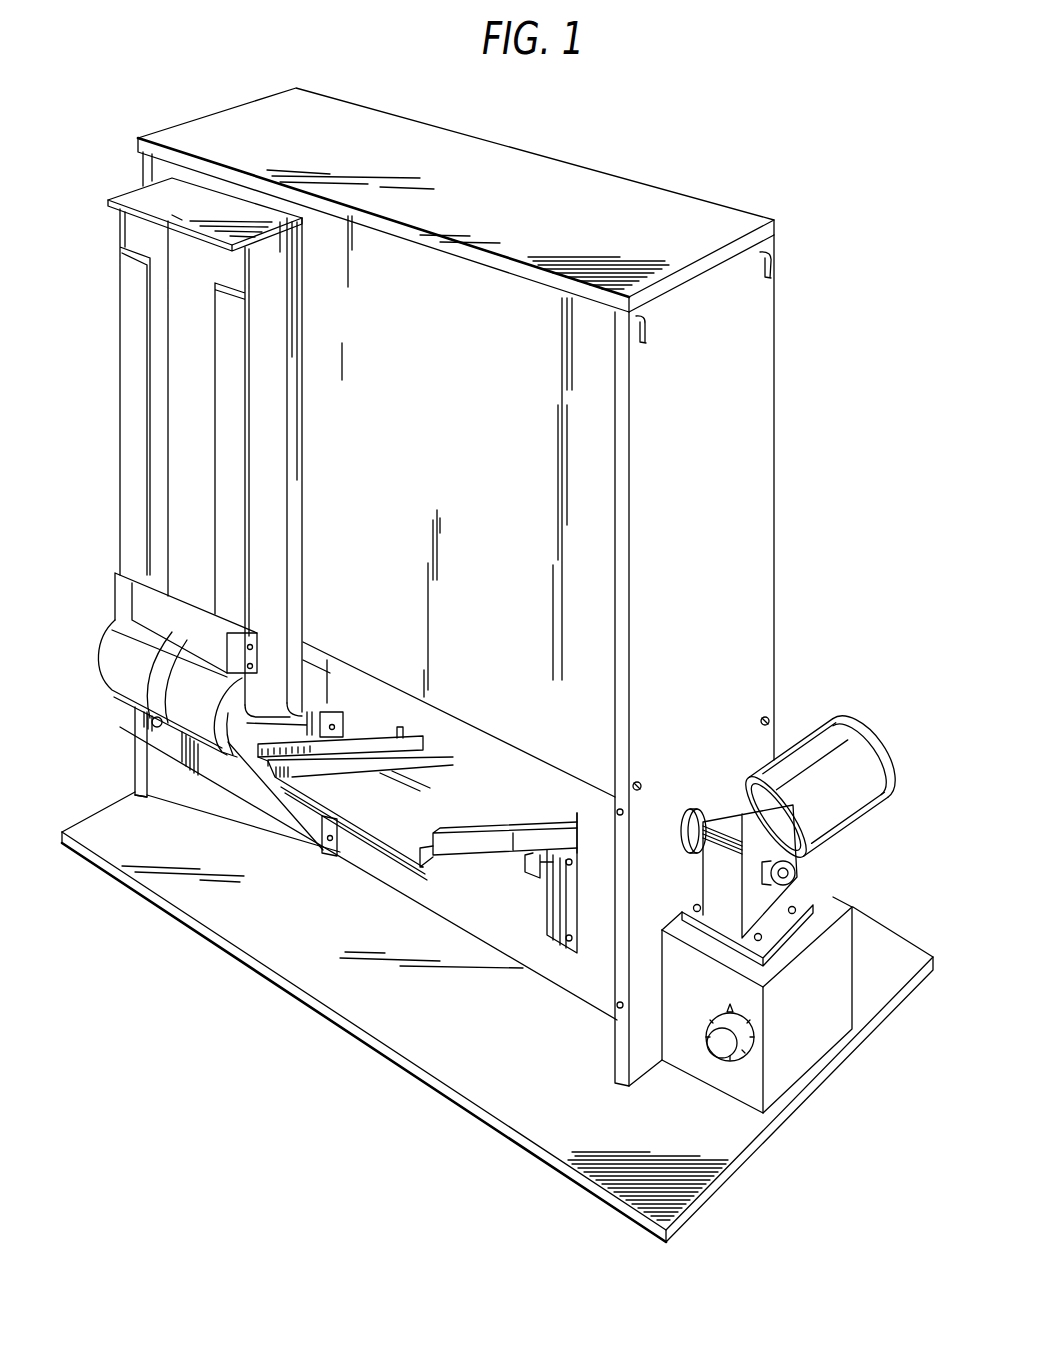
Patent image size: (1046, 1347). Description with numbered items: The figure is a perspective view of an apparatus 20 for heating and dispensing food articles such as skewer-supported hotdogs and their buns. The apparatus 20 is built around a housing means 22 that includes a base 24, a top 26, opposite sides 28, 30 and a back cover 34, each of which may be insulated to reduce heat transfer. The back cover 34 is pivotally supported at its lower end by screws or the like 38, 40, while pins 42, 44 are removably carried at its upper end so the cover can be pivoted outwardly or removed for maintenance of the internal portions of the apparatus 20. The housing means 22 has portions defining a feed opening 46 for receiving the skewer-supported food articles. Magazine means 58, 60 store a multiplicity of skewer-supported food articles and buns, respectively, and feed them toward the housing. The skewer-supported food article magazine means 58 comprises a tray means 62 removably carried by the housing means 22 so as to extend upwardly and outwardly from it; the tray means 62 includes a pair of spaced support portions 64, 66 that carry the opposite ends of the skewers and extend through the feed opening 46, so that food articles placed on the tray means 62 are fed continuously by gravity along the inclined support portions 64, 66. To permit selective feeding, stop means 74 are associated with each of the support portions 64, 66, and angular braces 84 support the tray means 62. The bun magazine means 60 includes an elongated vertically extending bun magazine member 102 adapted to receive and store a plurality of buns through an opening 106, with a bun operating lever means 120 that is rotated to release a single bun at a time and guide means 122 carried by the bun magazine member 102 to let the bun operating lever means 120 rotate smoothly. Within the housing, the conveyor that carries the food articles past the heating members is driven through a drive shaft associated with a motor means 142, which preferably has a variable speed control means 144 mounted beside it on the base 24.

The apparatus 20 is at (752, 139).
The housing means 22 is at (778, 438).
The base 24 is at (894, 945).
The top 26 is at (608, 177).
The side 28 is at (754, 543).
The side 30 is at (143, 173).
The back cover 34 is at (443, 276).
The screw 38 is at (769, 716).
The screw 40 is at (640, 782).
The pin 42 is at (776, 272).
The pin 44 is at (651, 331).
The feed opening 46 is at (514, 797).
The skewer-supported food article magazine means 58 is at (426, 788).
The bun magazine means 60 is at (98, 618).
The tray means 62 is at (420, 875).
The support portion 64 is at (427, 842).
The support portion 66 is at (303, 760).
The stop means 74 is at (528, 884).
The angular brace 84 is at (537, 906).
The bun magazine member 102 is at (276, 416).
The opening 106 is at (197, 256).
The bun operating lever means 120 is at (152, 720).
The guide means 122 is at (175, 676).
The motor means 142 is at (840, 756).
The variable speed control means 144 is at (750, 1020).